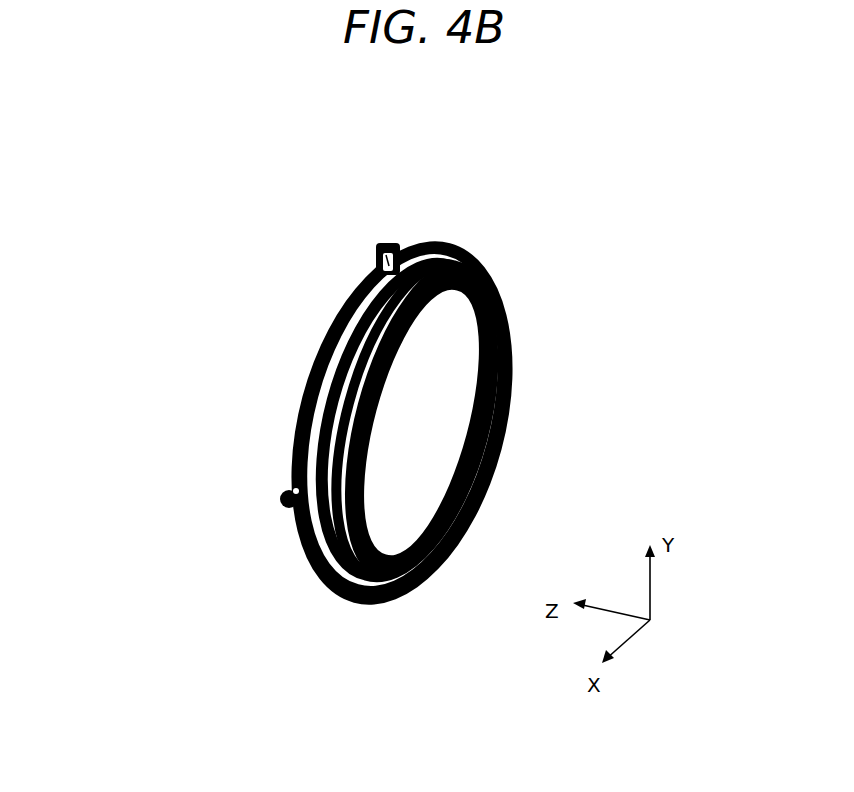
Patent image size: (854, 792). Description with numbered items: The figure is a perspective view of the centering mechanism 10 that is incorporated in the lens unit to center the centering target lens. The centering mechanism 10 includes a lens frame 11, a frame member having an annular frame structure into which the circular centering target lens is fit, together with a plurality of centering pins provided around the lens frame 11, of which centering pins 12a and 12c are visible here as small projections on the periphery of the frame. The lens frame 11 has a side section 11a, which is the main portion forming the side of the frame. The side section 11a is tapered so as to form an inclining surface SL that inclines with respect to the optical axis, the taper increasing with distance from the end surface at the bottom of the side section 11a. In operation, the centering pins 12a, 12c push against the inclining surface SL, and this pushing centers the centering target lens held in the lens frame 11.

The centering mechanism 10 is at (347, 349).
The lens frame 11 is at (322, 318).
The side section 11a is at (333, 362).
The inclining surface SL is at (317, 407).
The centering pin 12a is at (388, 243).
The centering pin 12c is at (285, 493).